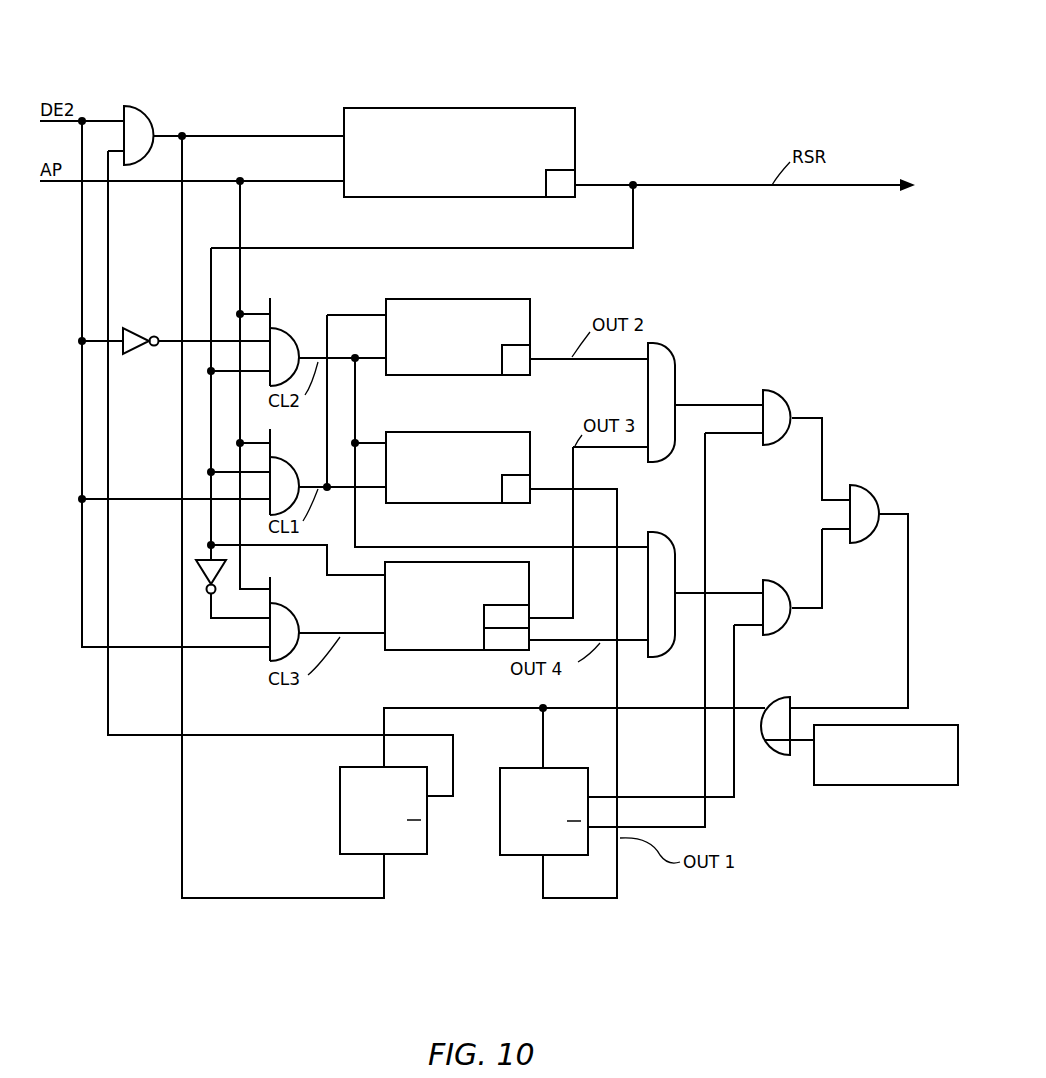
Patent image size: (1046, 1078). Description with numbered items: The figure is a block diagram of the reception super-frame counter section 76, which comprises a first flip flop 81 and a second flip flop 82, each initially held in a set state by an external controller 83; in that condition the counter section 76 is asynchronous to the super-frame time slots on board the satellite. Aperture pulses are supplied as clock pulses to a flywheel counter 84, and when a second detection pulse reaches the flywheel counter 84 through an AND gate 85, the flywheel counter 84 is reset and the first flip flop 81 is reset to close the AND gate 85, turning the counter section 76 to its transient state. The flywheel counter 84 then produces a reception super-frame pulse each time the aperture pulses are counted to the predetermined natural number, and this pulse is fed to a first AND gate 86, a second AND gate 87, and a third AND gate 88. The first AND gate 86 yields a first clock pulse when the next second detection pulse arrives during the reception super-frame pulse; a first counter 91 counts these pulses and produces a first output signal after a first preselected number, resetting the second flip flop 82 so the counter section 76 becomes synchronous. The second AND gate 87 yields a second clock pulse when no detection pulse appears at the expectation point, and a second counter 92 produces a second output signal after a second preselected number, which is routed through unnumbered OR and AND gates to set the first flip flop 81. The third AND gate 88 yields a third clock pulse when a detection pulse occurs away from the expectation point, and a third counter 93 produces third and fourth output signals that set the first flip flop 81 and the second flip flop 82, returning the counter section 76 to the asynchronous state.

The reception super-frame counter section 76 is at (485, 76).
The first flip flop 81 is at (389, 856).
The second flip flop 82 is at (514, 857).
The external controller 83 is at (870, 787).
The flywheel counter 84 is at (536, 108).
The AND gate 85 is at (152, 124).
The first AND gate 86 is at (283, 461).
The second AND gate 87 is at (283, 331).
The third AND gate 88 is at (283, 606).
The first counter 91 is at (497, 431).
The second counter 92 is at (533, 309).
The third counter 93 is at (530, 587).